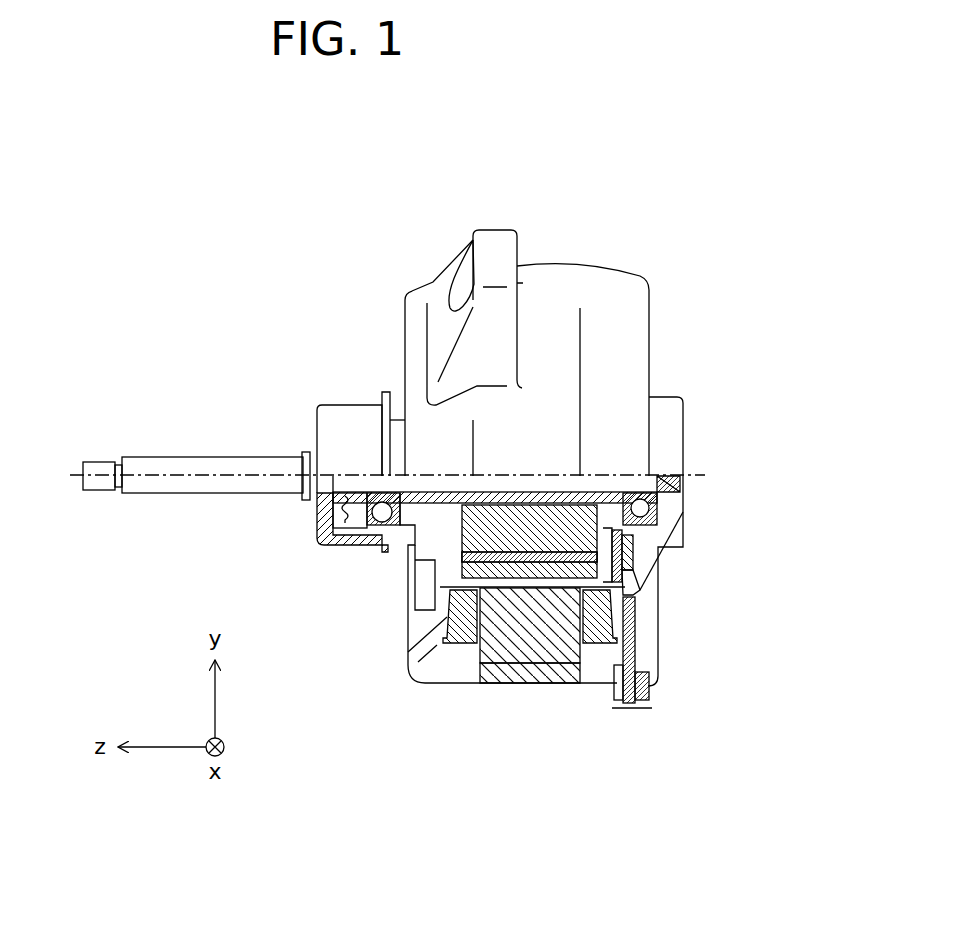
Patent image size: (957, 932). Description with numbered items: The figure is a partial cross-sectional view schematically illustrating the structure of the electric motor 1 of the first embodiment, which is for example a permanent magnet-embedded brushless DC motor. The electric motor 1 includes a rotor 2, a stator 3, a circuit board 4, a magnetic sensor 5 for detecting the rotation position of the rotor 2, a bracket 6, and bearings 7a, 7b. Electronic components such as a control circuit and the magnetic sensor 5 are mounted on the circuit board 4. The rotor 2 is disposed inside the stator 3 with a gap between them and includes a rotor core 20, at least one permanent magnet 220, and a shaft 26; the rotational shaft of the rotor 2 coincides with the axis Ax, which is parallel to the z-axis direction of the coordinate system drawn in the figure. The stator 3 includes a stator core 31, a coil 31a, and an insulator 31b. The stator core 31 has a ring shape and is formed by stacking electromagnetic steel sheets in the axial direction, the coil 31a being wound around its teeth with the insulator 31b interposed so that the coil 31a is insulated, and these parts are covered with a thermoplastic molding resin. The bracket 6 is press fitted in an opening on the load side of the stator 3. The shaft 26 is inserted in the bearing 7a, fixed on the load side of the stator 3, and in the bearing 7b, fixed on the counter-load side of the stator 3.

The electric motor 1 is at (336, 215).
The rotor 2 is at (420, 538).
The stator 3 is at (607, 292).
The circuit board 4 is at (634, 558).
The magnetic sensor 5 is at (658, 546).
The bracket 6 is at (410, 622).
The bearing 7a is at (370, 532).
The bearing 7b is at (662, 504).
The rotor core 20 is at (460, 526).
The shaft 26 is at (205, 455).
The stator core 31 is at (525, 640).
The coil 31a is at (450, 626).
The insulator 31b is at (480, 646).
The permanent magnet 220 is at (565, 562).
The axis Ax is at (160, 478).